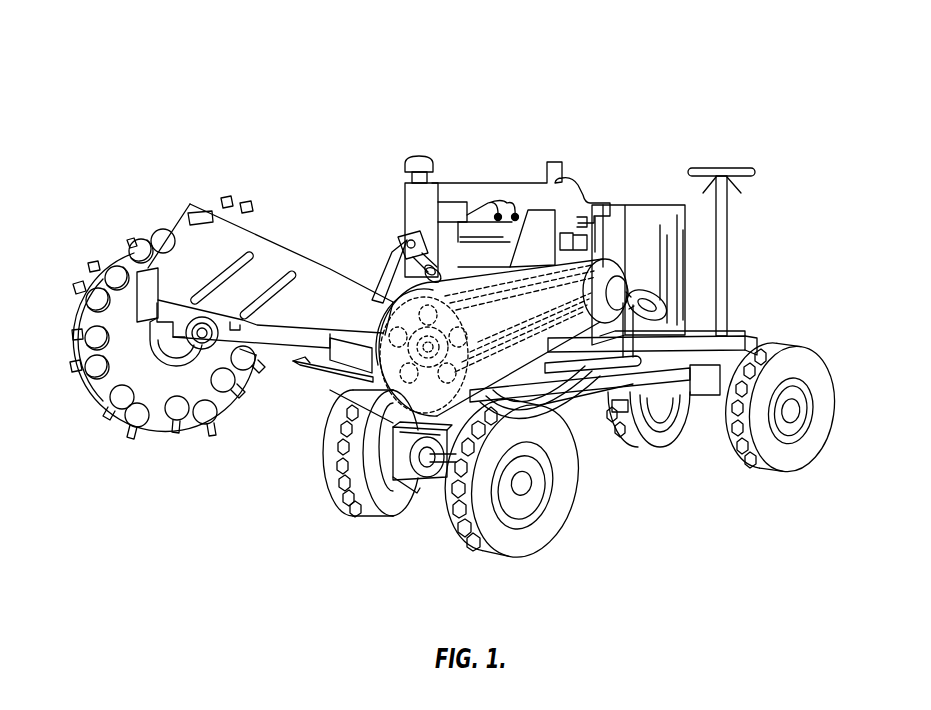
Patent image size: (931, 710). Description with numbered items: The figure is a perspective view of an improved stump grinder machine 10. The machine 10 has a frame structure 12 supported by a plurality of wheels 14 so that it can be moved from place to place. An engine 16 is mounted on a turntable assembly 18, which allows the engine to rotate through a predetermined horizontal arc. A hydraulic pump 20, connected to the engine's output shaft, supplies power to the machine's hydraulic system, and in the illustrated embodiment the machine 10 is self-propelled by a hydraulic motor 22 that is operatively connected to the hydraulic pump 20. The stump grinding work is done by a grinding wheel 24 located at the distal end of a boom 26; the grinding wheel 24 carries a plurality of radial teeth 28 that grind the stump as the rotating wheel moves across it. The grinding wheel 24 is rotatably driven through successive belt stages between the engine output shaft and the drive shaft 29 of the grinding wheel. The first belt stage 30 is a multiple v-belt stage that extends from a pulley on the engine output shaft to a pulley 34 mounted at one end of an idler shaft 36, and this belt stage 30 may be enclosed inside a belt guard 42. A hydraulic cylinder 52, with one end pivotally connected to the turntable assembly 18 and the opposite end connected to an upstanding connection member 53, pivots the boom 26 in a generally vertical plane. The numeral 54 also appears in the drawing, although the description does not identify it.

The stump grinder machine 10 is at (630, 128).
The frame structure 12 is at (744, 314).
The wheels 14 is at (327, 463).
The engine 16 is at (487, 183).
The turntable assembly 18 is at (620, 437).
The hydraulic pump 20 is at (633, 282).
The hydraulic motor 22 is at (397, 480).
The grinding wheel 24 is at (157, 430).
The boom 26 is at (268, 228).
The teeth 28 is at (123, 232).
The drive shaft 29 is at (153, 337).
The belt stage 30 is at (540, 265).
The pulley 34 is at (405, 385).
The idler shaft 36 is at (390, 390).
The belt guard 42 is at (378, 328).
The hydraulic cylinder 52 is at (452, 255).
The connection member 53 is at (393, 234).
The support bracket 54 is at (640, 375).